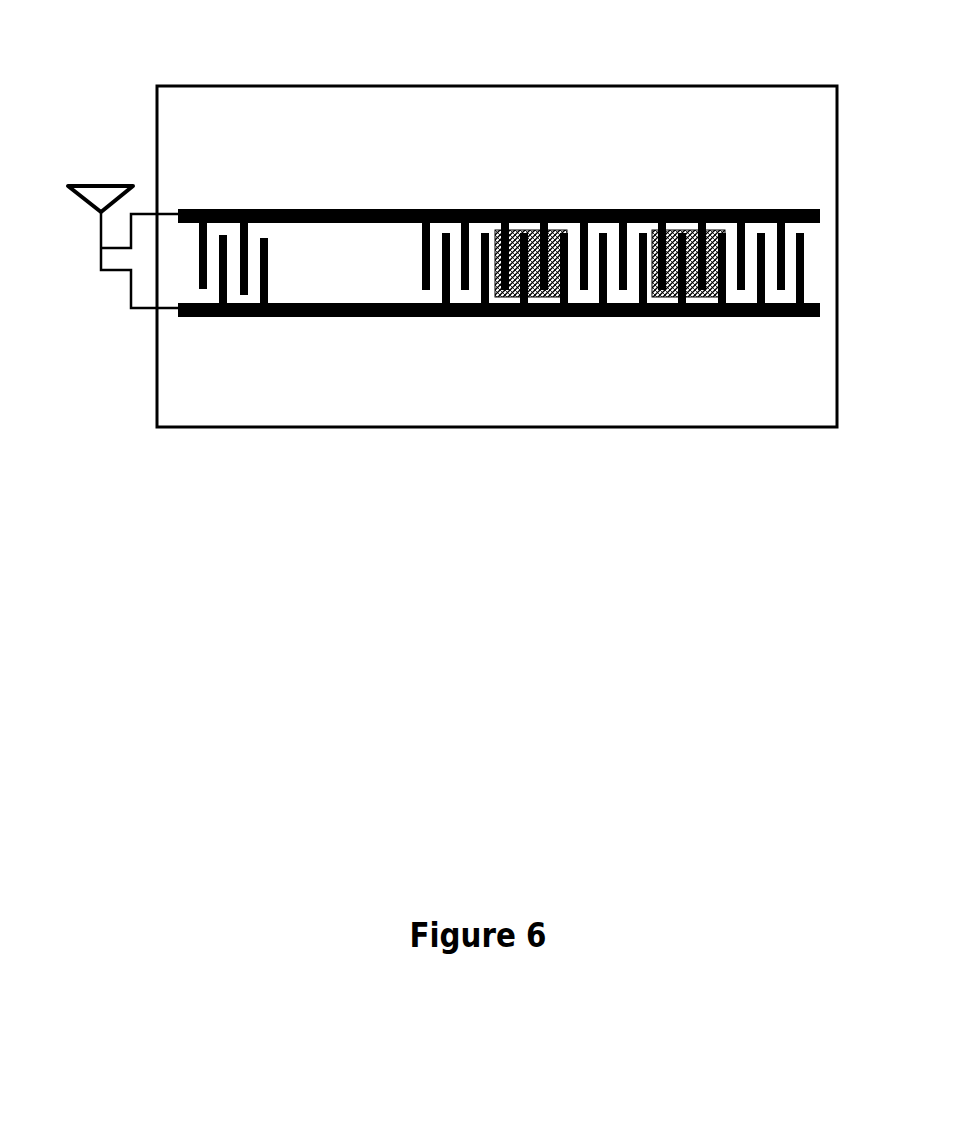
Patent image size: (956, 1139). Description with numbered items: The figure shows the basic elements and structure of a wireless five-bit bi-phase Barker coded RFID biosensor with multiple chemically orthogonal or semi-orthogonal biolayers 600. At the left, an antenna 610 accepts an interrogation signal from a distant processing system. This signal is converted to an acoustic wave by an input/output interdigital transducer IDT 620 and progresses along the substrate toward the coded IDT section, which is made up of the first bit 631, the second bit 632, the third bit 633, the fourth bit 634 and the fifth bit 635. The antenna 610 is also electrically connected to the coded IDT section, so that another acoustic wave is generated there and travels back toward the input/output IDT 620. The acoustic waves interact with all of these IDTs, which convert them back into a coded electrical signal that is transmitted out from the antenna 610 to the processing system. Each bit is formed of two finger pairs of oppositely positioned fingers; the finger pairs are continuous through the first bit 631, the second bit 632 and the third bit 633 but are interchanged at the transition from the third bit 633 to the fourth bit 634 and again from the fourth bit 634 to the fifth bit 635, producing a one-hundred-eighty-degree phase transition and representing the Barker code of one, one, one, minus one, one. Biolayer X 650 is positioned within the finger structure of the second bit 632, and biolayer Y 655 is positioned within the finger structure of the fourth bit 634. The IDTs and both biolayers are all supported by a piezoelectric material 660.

The 5-bit bi-phase Barker coded RFID biosensor with multiple biolayers 600 is at (439, 384).
The antenna 610 is at (77, 170).
The input/output interdigital transducer IDT 620 is at (250, 330).
The Bit #1 631 is at (487, 328).
The Bit #2 632 is at (568, 188).
The Bit #3 633 is at (585, 328).
The Bit #4 634 is at (722, 188).
The Bit #5 635 is at (798, 328).
The biolayer X 650 is at (526, 325).
The biolayer Y 655 is at (694, 325).
The piezoelectric material 660 is at (358, 390).